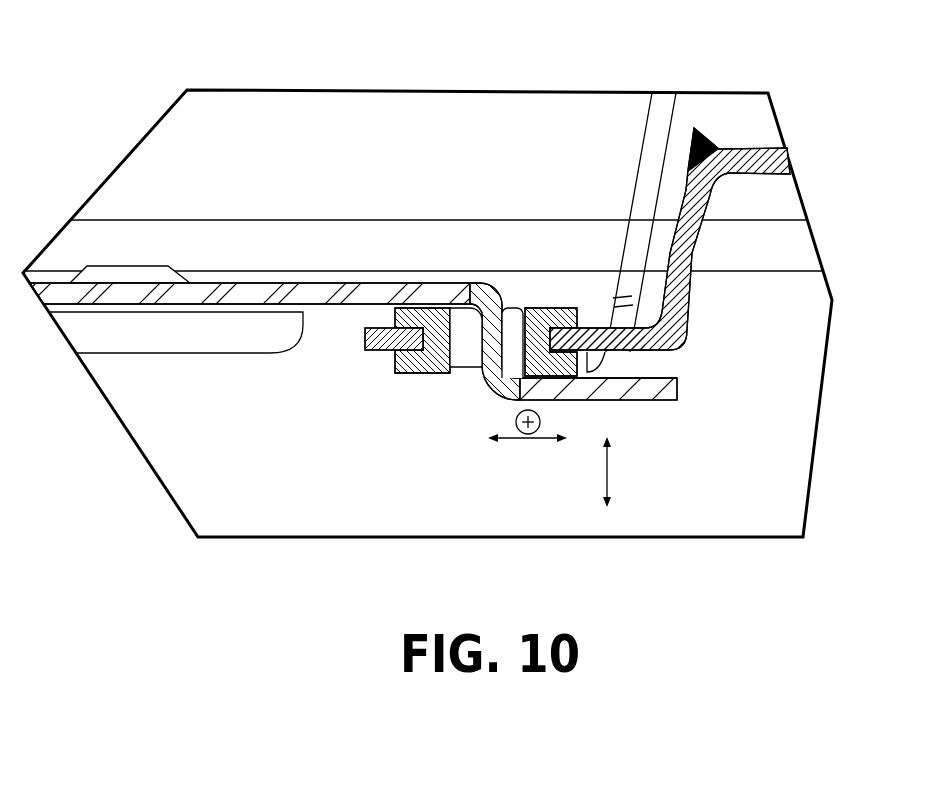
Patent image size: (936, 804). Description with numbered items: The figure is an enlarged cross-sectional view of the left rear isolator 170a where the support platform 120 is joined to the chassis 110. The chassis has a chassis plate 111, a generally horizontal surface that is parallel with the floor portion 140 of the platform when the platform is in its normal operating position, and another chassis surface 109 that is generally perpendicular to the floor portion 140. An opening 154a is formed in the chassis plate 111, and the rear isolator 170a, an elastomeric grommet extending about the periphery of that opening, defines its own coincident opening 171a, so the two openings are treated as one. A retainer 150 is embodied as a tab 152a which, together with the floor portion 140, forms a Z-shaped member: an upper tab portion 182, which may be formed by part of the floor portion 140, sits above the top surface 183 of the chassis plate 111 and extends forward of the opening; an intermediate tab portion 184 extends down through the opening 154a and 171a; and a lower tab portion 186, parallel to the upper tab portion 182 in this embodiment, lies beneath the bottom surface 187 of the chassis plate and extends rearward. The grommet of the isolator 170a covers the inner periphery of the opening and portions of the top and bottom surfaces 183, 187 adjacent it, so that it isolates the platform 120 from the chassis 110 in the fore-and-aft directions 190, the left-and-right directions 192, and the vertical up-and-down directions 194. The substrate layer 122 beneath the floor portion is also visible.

The surface 109 is at (684, 196).
The chassis 110 is at (688, 298).
The chassis plate 111 is at (613, 285).
The support platform 120 is at (237, 266).
The substrate layer 122 is at (341, 306).
The floor portion 140 is at (267, 293).
The retainer 150 is at (501, 283).
The tab 152a is at (672, 406).
The opening 154a is at (467, 355).
The rear isolator 170a is at (407, 374).
The opening 171a is at (513, 322).
The upper tab portion 182 is at (446, 316).
The top surface 183 is at (384, 328).
The intermediate tab portion 184 is at (567, 377).
The lower tab portion 186 is at (592, 372).
The bottom surface 187 is at (690, 352).
The fore-and-aft directions 190 is at (528, 441).
The left-and-right directions 192 is at (543, 415).
The vertical up-and-down directions 194 is at (618, 472).